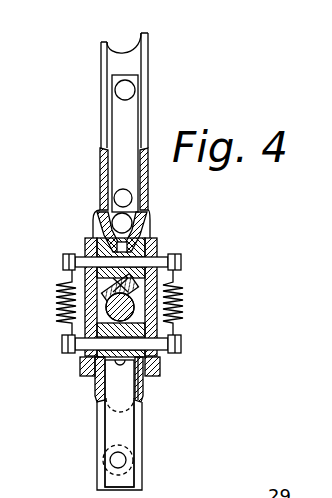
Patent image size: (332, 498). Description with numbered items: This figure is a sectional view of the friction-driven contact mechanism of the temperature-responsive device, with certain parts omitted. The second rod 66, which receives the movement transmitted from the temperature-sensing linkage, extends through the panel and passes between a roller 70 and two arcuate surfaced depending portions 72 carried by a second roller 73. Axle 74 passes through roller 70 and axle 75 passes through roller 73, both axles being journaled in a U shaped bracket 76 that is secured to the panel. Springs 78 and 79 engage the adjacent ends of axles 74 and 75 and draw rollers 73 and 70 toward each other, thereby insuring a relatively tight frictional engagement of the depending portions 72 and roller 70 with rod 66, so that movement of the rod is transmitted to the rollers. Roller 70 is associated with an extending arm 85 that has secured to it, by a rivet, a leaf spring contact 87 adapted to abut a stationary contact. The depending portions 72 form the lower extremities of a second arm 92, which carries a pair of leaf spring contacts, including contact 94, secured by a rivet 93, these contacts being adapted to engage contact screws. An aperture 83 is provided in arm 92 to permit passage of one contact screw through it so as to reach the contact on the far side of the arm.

The aperture 83 is at (108, 42).
The second arm 92 is at (146, 69).
The leaf spring contact 94 is at (133, 90).
The rivet 93 is at (127, 198).
The second roller 73 is at (150, 235).
The U shaped bracket 76 is at (85, 243).
The axle 75 is at (182, 263).
The arcuate surfaced depending portions 72 is at (173, 284).
The spring 78 is at (168, 317).
The spring 79 is at (57, 323).
The axle 74 is at (181, 346).
The second rod 66 is at (104, 332).
The roller 70 is at (160, 373).
The extending arm 85 is at (141, 441).
The leaf spring contact 87 is at (108, 460).